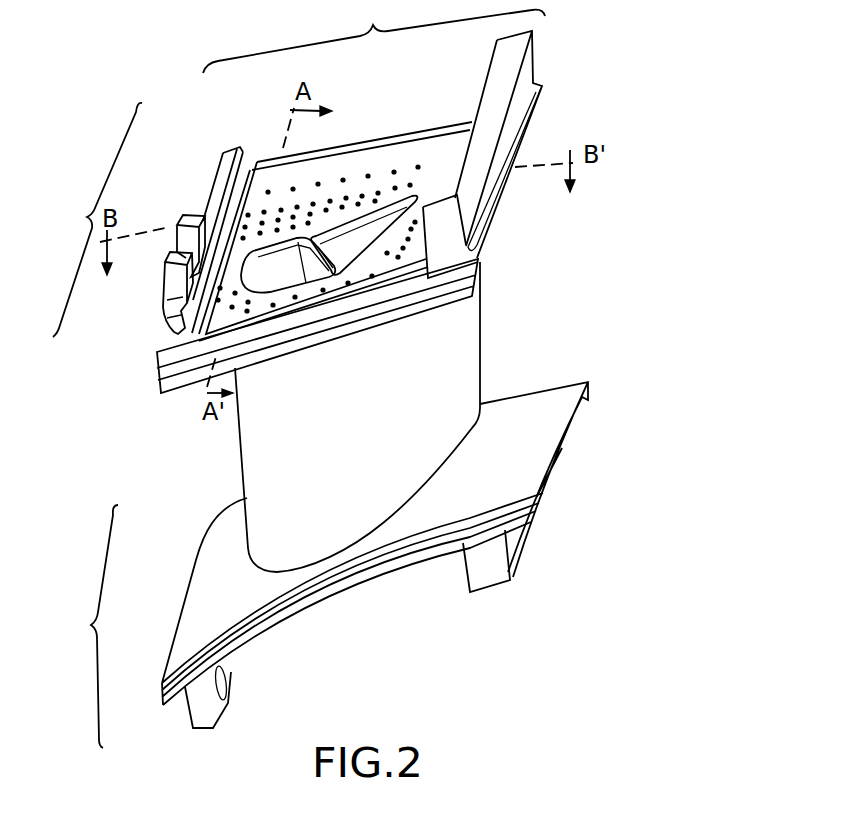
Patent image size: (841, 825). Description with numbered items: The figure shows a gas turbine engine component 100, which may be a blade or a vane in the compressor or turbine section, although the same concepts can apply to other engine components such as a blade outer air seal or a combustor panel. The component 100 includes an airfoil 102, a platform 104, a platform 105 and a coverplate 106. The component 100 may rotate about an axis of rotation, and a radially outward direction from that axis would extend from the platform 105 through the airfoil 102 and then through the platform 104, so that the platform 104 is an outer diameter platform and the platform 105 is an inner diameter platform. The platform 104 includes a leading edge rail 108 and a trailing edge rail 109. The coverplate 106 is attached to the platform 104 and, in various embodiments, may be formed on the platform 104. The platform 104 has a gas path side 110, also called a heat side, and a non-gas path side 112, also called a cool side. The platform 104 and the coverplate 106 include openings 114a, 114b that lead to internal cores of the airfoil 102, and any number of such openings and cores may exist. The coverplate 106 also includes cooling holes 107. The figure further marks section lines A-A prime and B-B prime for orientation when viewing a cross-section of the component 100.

The gas turbine engine component 100 is at (374, 36).
The airfoil 102 is at (481, 362).
The platform 104 is at (261, 222).
The platform 105 is at (315, 565).
The coverplate 106 is at (388, 199).
The cooling holes 107 is at (408, 255).
The leading edge rail 108 is at (221, 188).
The trailing edge rail 109 is at (508, 64).
The gas path side 110 is at (190, 385).
The non-gas path side 112 is at (182, 320).
The opening 114a is at (283, 283).
The opening 114b is at (347, 252).